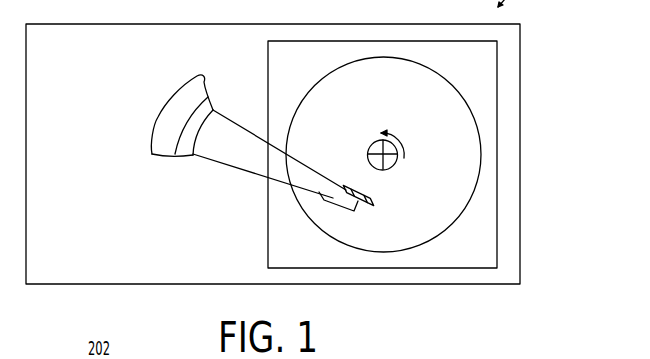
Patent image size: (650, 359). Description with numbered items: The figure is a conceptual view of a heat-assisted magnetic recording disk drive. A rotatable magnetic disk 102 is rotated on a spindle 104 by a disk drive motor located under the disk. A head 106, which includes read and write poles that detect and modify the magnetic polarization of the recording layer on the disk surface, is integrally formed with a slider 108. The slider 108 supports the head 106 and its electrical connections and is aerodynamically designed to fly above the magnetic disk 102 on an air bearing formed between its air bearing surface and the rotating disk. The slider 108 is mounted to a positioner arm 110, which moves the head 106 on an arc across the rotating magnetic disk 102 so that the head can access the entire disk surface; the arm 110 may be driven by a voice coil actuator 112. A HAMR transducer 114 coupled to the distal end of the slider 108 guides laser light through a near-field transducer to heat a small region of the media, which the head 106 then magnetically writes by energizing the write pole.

The magnetic disk 102 is at (437, 84).
The spindle 104 is at (394, 156).
The head 106 is at (343, 187).
The slider 108 is at (327, 197).
The positioner arm 110 is at (227, 163).
The voice coil actuator 112 is at (160, 127).
The HAMR transducer 114 is at (372, 203).